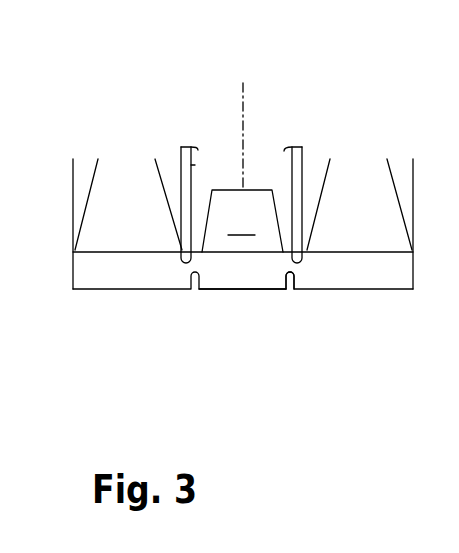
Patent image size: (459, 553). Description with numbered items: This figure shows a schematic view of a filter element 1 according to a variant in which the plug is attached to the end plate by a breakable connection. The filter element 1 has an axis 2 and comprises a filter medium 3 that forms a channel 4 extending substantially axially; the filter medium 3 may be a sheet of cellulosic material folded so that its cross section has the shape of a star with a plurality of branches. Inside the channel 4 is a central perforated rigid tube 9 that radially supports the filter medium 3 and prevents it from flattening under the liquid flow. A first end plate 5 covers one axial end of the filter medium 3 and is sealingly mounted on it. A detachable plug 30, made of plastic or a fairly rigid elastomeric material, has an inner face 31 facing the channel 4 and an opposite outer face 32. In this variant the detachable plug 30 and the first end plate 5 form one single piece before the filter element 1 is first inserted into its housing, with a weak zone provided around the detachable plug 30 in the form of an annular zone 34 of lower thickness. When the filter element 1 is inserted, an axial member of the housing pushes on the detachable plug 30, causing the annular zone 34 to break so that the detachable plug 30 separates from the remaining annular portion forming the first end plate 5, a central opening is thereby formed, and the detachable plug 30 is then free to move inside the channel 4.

The filter element 1 is at (115, 135).
The axis 2 is at (243, 95).
The filter medium 3 is at (138, 212).
The channel 4 is at (207, 178).
The first end plate 5 is at (137, 263).
The central perforated rigid tube 9 is at (193, 166).
The detachable plug 30 is at (242, 221).
The inner face 31 is at (256, 170).
The outer face 32 is at (237, 290).
The annular zone 34 is at (290, 290).